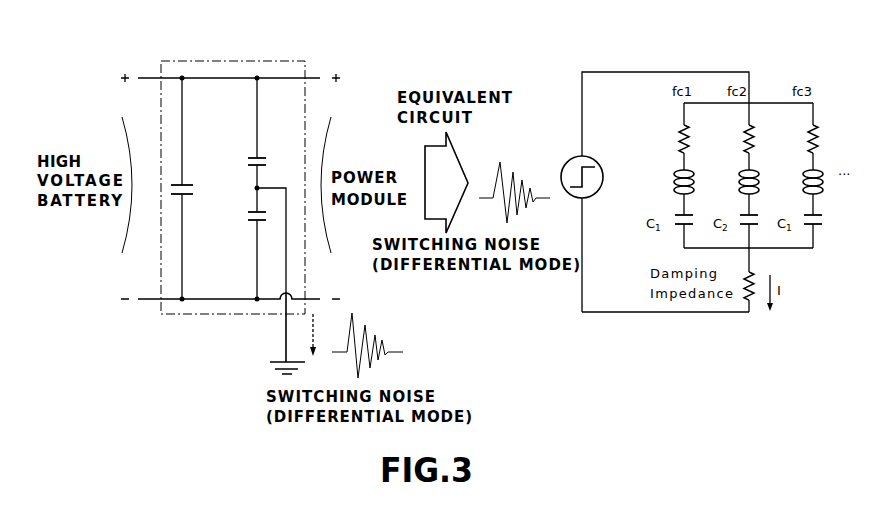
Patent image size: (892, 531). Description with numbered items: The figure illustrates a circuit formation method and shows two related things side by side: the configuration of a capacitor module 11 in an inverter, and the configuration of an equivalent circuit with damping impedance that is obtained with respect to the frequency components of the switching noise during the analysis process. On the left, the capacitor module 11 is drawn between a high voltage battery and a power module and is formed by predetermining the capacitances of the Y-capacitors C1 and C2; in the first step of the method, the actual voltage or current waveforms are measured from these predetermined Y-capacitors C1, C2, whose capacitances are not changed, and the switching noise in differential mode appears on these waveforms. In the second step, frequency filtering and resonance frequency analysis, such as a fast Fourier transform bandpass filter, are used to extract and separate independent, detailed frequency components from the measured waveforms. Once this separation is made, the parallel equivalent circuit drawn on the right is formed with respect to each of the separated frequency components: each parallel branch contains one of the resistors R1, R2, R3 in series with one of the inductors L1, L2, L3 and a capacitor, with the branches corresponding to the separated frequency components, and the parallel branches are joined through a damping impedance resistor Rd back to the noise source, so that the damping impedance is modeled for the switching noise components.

The capacitor module 11 is at (263, 61).
The Y-capacitor C1 is at (264, 133).
The Y-capacitor C2 is at (247, 243).
The resistor R1 is at (667, 132).
The resistor R2 is at (733, 132).
The resistor R3 is at (797, 132).
The inductor L1 is at (671, 182).
The inductor L2 is at (736, 182).
The inductor L3 is at (800, 182).
The damping impedance resistor Rd is at (758, 280).